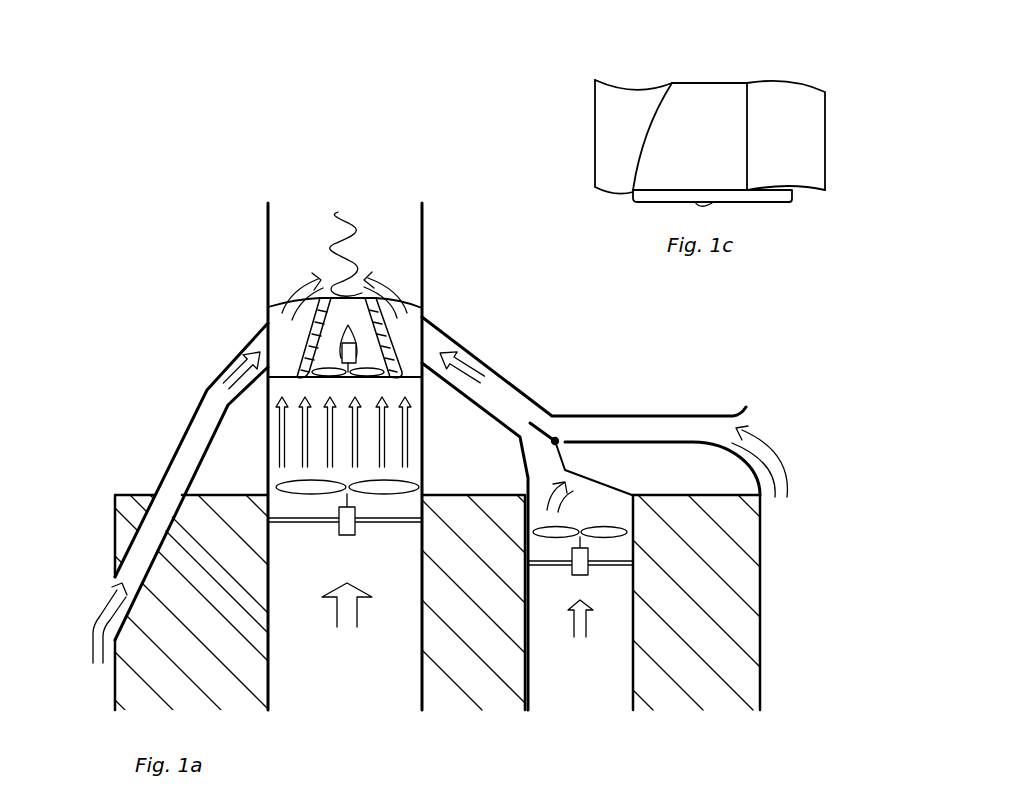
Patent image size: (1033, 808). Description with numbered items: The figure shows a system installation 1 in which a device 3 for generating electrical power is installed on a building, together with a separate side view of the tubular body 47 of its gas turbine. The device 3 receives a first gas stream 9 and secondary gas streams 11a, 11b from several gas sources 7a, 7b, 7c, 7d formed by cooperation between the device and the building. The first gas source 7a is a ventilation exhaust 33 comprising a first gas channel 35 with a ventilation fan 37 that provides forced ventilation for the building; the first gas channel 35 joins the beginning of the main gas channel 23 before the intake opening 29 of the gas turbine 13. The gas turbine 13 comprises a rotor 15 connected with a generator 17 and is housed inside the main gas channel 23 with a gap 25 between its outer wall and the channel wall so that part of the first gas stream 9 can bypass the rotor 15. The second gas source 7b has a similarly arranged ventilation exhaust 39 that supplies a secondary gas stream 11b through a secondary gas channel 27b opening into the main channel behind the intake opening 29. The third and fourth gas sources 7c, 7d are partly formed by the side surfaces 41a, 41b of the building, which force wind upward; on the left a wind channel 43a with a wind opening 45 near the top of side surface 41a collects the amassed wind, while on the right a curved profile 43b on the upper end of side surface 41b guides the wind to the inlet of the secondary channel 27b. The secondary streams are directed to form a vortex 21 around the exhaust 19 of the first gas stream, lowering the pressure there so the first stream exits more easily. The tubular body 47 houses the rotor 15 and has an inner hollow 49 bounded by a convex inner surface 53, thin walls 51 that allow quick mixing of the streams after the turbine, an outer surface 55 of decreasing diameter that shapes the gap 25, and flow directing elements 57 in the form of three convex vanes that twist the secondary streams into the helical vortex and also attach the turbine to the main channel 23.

In FIG. 1A, the system installation 1 is at (115, 336).
In FIG. 1A, the device for generation of electrical power 3 is at (422, 232).
In FIG. 1A, the first gas stream 9 is at (396, 412).
In FIG. 1A, the secondary gas stream 11a is at (235, 362).
In FIG. 1A, the secondary gas stream 11b is at (486, 372).
In FIG. 1A, the gas turbine 13 is at (300, 328).
In FIG. 1A, the rotor 15 is at (358, 350).
In FIG. 1A, the generator 17 is at (395, 340).
In FIG. 1A, the exhaust 19 is at (352, 298).
In FIG. 1A, the vortex 21 is at (338, 243).
In FIG. 1A, the main gas channel 23 is at (300, 440).
In FIG. 1A, the gap 25 is at (266, 378).
In FIG. 1A, the secondary gas channel 27b is at (506, 398).
In FIG. 1A, the intake opening 29 is at (325, 380).
In FIG. 1A, the ventilation exhaust 33 is at (362, 440).
In FIG. 1A, the first gas channel 35 is at (290, 633).
In FIG. 1A, the ventilation fan 37 is at (383, 487).
In FIG. 1A, the ventilation exhaust 39 is at (597, 496).
In FIG. 1A, the side surface 41a is at (115, 688).
In FIG. 1A, the side surface 41b is at (760, 604).
In FIG. 1A, the wind channel 43a is at (155, 517).
In FIG. 1A, the curved profile 43b is at (764, 452).
In FIG. 1A, the wind opening 45 is at (115, 588).
In FIG. 1C, the tubular body 47 is at (716, 103).
In FIG. 1A, the inner hollow 49 is at (400, 322).
In FIG. 1A, the thin walls 51 is at (300, 342).
In FIG. 1A, the inner surface 53 is at (355, 307).
In FIG. 1C, the outer surface 55 is at (668, 180).
In FIG. 1C, the flow directing elements 57 is at (810, 137).
In FIG. 1A, the first gas source 7a is at (345, 670).
In FIG. 1A, the second gas source 7b is at (578, 670).
In FIG. 1A, the third gas source 7c is at (90, 604).
In FIG. 1A, the fourth gas source 7d is at (757, 425).